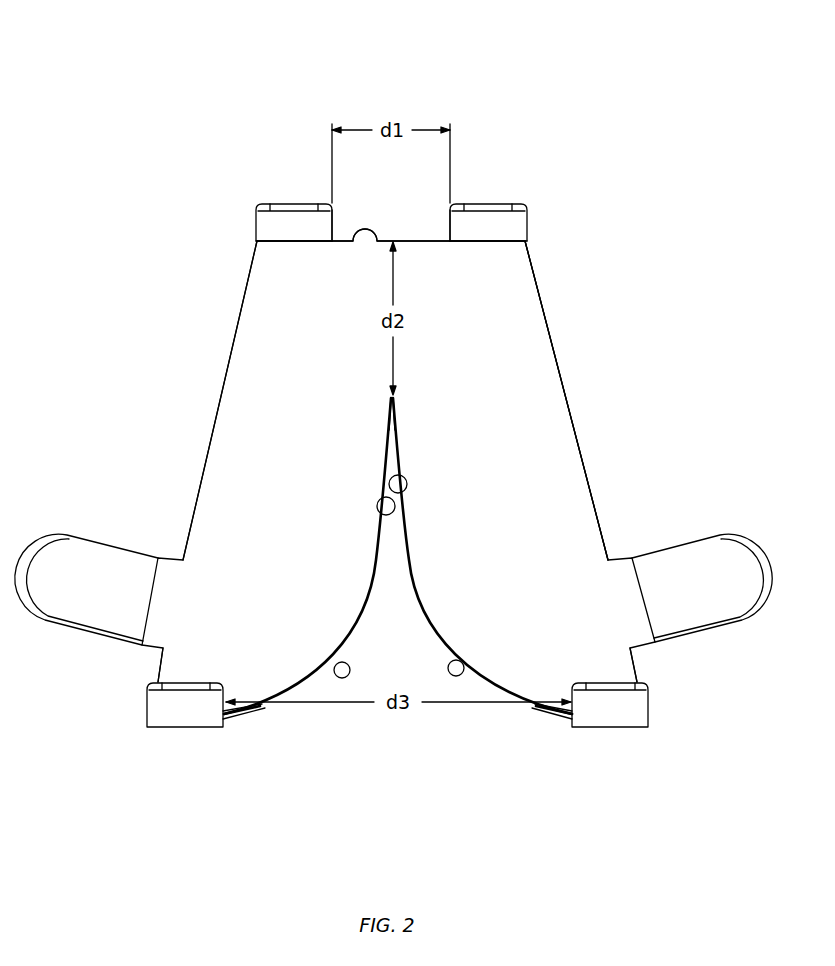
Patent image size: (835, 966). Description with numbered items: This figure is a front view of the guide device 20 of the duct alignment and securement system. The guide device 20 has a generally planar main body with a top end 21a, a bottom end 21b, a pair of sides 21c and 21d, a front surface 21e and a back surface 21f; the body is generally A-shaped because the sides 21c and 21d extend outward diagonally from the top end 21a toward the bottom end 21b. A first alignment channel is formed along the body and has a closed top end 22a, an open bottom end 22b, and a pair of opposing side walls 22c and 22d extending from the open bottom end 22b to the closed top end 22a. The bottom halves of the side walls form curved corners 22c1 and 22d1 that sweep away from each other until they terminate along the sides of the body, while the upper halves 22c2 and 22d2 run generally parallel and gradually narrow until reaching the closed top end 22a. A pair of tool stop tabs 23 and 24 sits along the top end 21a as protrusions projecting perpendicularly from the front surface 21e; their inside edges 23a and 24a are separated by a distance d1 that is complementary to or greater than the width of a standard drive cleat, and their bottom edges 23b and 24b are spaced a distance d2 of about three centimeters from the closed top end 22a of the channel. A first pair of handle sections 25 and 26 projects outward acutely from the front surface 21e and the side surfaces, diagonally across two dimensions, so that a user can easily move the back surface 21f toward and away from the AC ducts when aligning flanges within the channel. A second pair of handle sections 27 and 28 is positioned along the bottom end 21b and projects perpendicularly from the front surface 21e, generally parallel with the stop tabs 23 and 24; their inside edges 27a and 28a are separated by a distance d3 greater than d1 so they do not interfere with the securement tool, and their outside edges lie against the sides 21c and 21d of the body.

The guide device 20 is at (146, 96).
The top end 21a is at (356, 243).
The bottom end 21b is at (138, 723).
The side 21c is at (227, 362).
The side 21d is at (542, 300).
The front surface 21e is at (505, 339).
The back surface 21f is at (582, 406).
The closed top end 22a is at (396, 400).
The open bottom end 22b is at (402, 744).
The side wall 22c is at (365, 553).
The curved corner 22c1 is at (338, 661).
The upper half of side wall 22c2 is at (378, 515).
The side wall 22d is at (428, 553).
The curved corner 22d1 is at (458, 660).
The upper half of side wall 22d2 is at (403, 494).
The tool stop tab 23 is at (297, 202).
The inside edge 23a is at (334, 223).
The bottom edge 23b is at (300, 243).
The tool stop tab 24 is at (488, 202).
The inside edge 24a is at (449, 223).
The bottom edge 24b is at (482, 243).
The handle section 25 is at (83, 594).
The handle section 26 is at (685, 594).
The handle section 27 is at (183, 719).
The inside edge 27a is at (245, 721).
The handle section 28 is at (614, 719).
The inside edge 28a is at (548, 721).